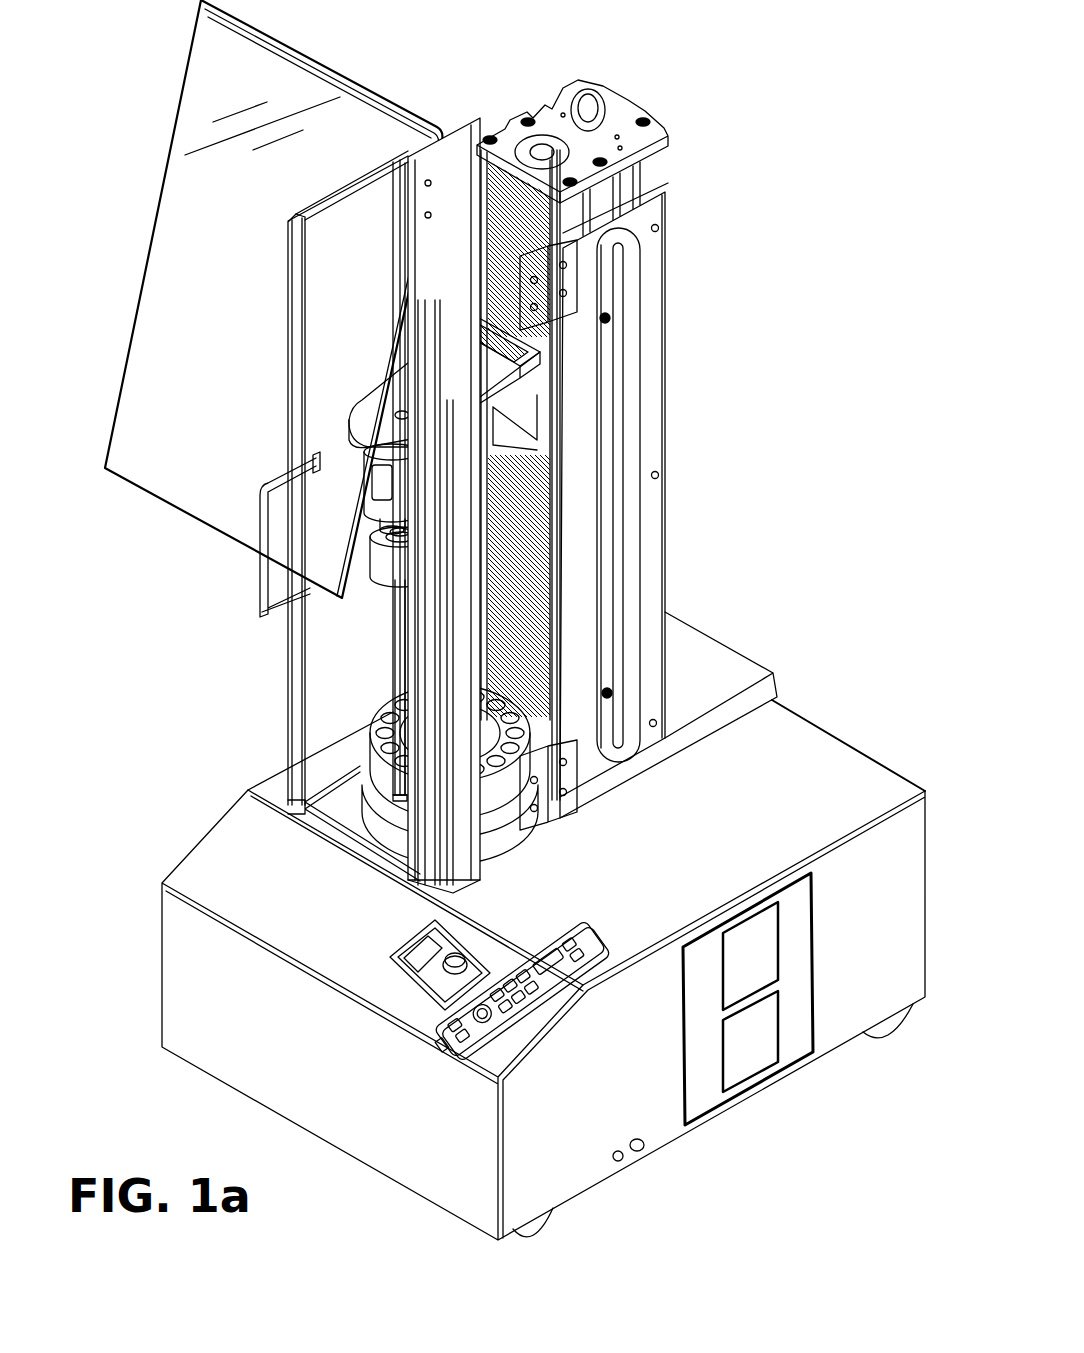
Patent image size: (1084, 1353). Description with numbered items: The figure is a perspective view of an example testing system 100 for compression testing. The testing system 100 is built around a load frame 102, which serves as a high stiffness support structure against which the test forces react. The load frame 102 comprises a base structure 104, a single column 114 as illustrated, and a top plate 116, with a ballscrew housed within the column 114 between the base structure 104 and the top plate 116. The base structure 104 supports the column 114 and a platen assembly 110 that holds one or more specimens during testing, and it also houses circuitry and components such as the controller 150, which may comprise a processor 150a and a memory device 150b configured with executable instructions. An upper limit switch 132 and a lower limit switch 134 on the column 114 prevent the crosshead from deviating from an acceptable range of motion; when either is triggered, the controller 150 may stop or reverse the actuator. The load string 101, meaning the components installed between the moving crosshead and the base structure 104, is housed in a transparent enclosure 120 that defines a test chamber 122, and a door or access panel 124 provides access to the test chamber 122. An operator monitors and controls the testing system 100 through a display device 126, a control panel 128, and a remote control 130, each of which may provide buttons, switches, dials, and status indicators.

The testing system 100 is at (778, 103).
The load string 101 is at (377, 653).
The load frame 102 is at (664, 449).
The base structure 104 is at (882, 762).
The platen assembly 110 is at (540, 818).
The column 114 is at (667, 435).
The top plate 116 is at (663, 122).
The enclosure 120 is at (285, 300).
The test chamber 122 is at (341, 631).
The door or access panel 124 is at (267, 576).
The display device 126 is at (348, 70).
The control panel 128 is at (405, 953).
The remote control 130 is at (592, 925).
The upper limit switch 132 is at (605, 320).
The lower limit switch 134 is at (613, 693).
The controller 150 is at (775, 999).
The processor 150a is at (750, 956).
The memory device 150b is at (750, 1041).